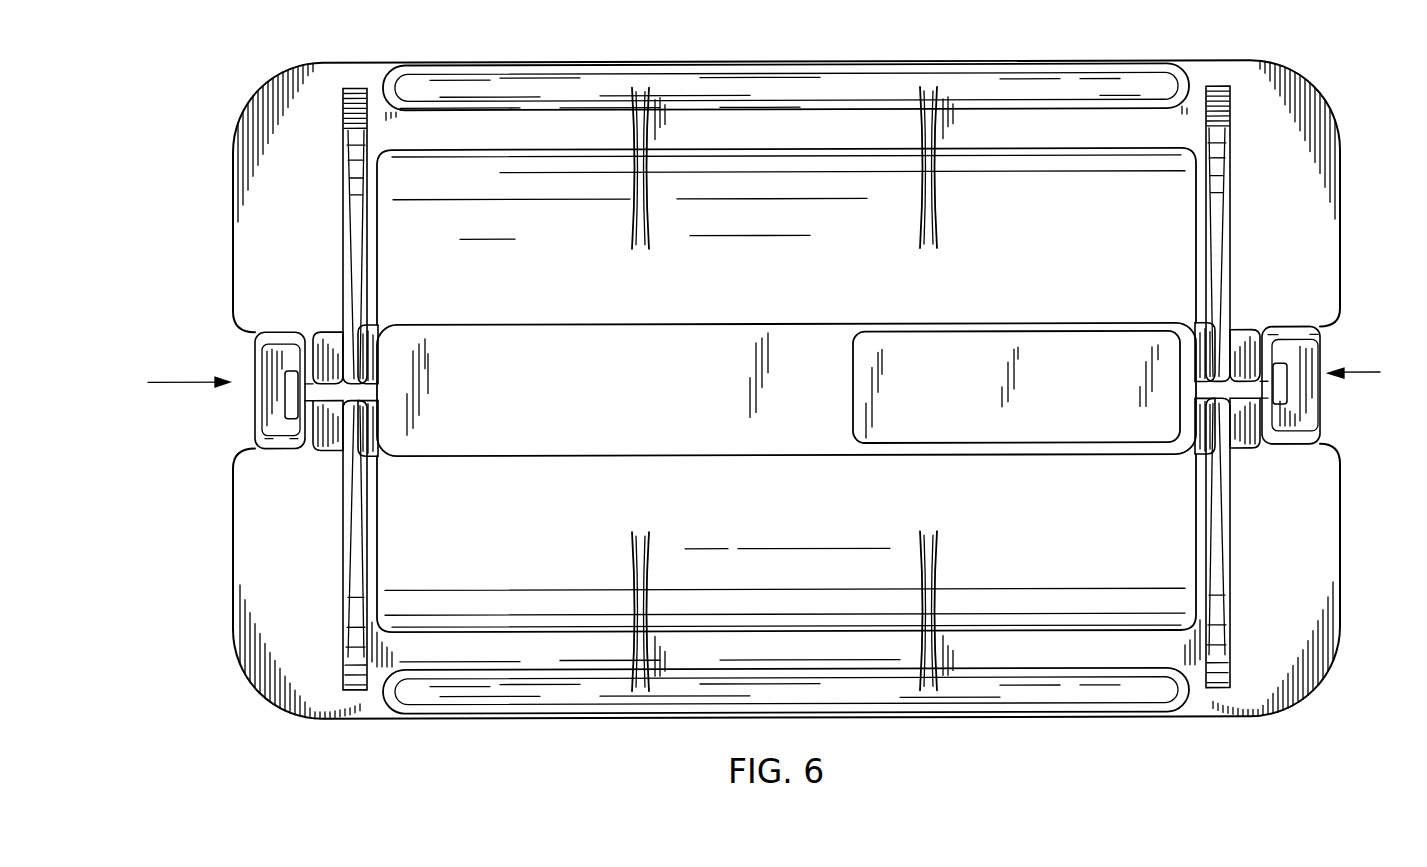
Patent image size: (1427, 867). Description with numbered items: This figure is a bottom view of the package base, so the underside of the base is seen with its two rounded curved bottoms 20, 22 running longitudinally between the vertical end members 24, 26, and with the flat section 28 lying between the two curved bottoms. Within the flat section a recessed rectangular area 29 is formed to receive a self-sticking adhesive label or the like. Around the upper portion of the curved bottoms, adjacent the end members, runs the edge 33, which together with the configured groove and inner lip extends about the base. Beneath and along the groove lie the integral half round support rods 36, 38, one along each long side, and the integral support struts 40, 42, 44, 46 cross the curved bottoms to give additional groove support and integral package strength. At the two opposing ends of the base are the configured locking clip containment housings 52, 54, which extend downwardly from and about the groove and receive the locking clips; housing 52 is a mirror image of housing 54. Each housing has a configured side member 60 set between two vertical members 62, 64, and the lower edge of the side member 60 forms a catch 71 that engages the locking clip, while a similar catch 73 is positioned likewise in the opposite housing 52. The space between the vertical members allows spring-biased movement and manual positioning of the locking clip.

The curved bottom 20 is at (770, 292).
The curved bottom 22 is at (768, 511).
The vertical end member 24 is at (357, 193).
The vertical end member 26 is at (1215, 185).
The flat section 28 is at (566, 401).
The recessed rectangular area 29 is at (1061, 396).
The edge 33 is at (236, 265).
The half round support rod 36 is at (795, 80).
The half round support rod 38 is at (1048, 695).
The support strut 40 is at (641, 190).
The support strut 42 is at (928, 182).
The support strut 44 is at (642, 567).
The support strut 46 is at (928, 562).
The locking clip containment housing 52 is at (175, 382).
The locking clip containment housing 54 is at (1368, 372).
The side member 60 is at (1307, 357).
The vertical member 62 is at (1282, 328).
The vertical member 64 is at (1285, 443).
The catch 71 is at (1282, 398).
The catch 73 is at (288, 405).